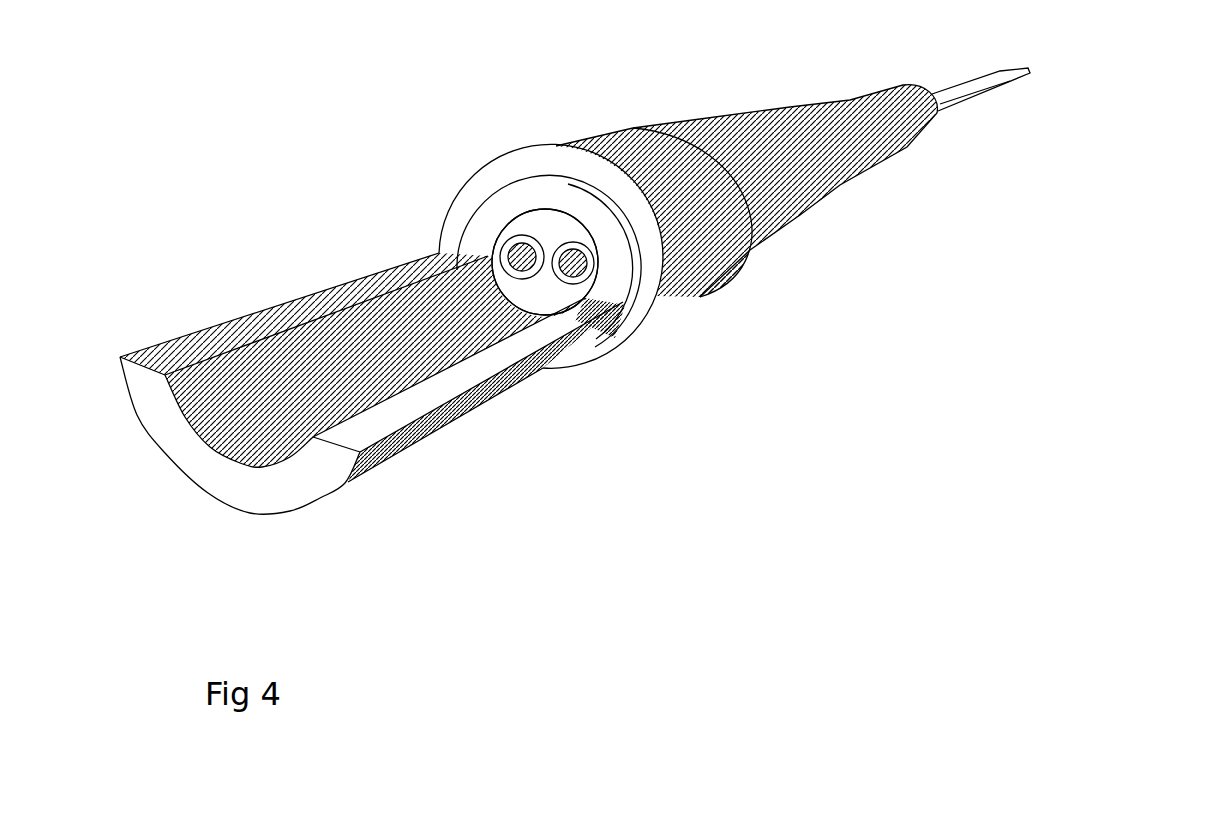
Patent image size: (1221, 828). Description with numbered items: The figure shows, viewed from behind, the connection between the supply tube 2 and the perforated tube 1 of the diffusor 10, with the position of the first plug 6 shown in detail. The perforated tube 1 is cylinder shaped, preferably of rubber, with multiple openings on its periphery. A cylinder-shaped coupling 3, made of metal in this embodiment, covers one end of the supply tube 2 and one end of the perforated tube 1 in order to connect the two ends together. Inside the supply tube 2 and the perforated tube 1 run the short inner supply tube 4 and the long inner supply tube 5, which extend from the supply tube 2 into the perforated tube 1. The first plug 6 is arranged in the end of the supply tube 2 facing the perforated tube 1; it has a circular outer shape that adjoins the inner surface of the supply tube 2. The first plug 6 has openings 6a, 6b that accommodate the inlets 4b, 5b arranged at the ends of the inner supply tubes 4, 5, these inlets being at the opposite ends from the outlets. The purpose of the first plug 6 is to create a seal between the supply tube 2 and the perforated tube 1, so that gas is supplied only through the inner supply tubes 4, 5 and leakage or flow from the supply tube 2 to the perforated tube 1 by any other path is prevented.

The perforated tube 1 is at (806, 128).
The supply tube 2 is at (317, 295).
The coupling 3 is at (485, 158).
The short inner supply tube 4 is at (567, 260).
The inlet of short inner supply tube 4b is at (567, 267).
The long inner supply tube 5 is at (540, 268).
The inlet of long inner supply tube 5b is at (565, 262).
The first plug 6 is at (535, 232).
The opening of first plug 6a is at (562, 225).
The opening of first plug 6b is at (533, 273).
The diffusor 10 is at (937, 171).